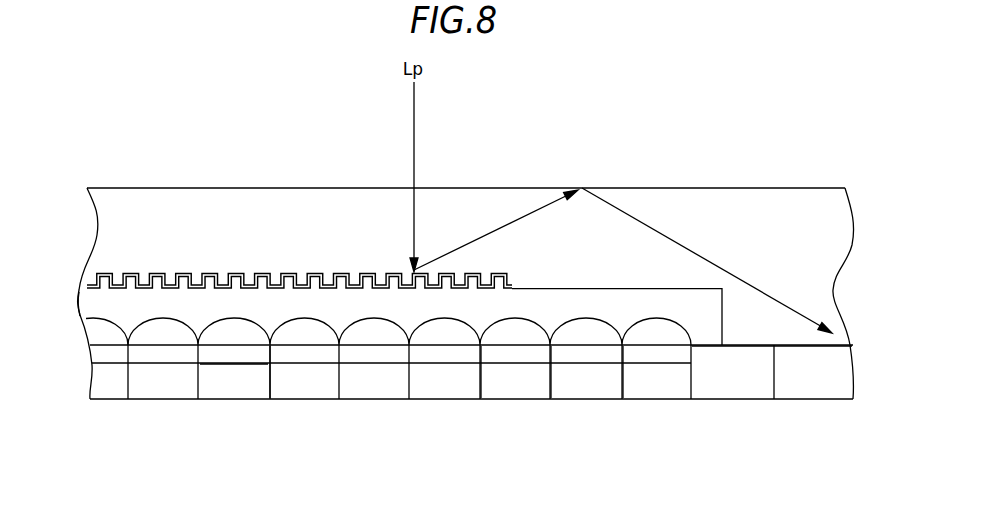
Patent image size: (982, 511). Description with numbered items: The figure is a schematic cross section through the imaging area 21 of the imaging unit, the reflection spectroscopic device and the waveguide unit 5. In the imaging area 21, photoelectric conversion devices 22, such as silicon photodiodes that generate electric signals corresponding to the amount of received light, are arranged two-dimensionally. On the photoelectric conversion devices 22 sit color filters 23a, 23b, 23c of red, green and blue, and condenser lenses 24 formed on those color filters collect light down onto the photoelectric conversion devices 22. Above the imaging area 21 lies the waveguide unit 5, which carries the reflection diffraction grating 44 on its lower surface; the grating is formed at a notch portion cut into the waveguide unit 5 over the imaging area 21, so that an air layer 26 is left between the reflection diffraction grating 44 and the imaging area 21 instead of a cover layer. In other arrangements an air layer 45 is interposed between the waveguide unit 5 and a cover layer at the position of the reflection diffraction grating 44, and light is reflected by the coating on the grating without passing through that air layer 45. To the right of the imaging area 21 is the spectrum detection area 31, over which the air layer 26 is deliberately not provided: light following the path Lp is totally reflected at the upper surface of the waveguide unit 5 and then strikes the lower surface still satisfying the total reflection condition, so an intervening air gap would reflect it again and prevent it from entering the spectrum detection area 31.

The waveguide unit 5 is at (170, 188).
The reflection diffraction grating 44 is at (238, 273).
The air layer 45 is at (357, 289).
The air layer 26 is at (83, 310).
The imaging area 21 is at (394, 420).
The photoelectric conversion device 22 is at (232, 390).
The condenser lens 24 is at (287, 338).
The color filter 23a is at (497, 357).
The color filter 23b is at (567, 358).
The color filter 23c is at (635, 358).
The spectrum detection area 31 is at (812, 400).